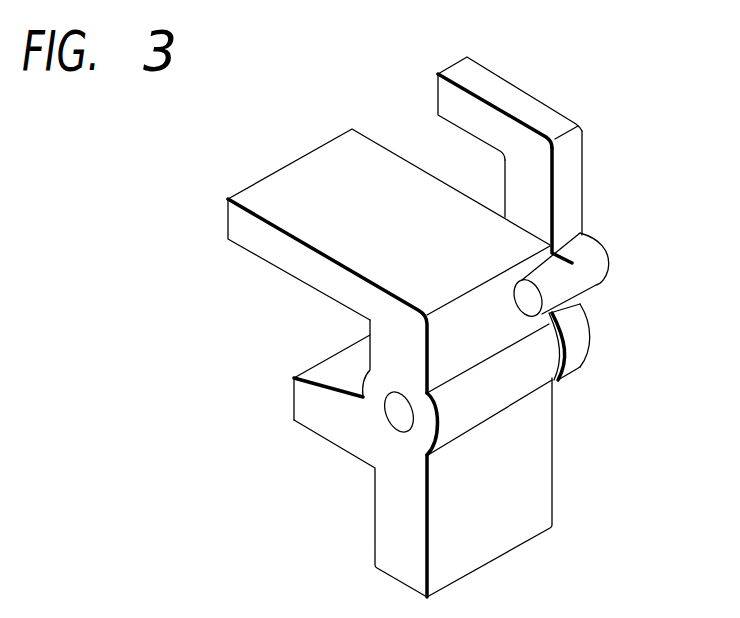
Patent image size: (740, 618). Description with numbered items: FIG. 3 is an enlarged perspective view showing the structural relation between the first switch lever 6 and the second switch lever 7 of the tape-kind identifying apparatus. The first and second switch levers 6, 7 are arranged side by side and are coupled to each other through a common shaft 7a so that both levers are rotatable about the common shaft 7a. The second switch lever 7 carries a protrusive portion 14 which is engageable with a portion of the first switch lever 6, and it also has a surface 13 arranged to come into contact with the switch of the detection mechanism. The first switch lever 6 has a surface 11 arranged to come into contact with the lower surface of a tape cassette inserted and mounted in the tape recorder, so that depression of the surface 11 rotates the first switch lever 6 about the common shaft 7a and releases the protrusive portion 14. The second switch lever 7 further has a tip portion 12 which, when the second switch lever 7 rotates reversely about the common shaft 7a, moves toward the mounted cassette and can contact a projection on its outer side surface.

The first switch lever 6 is at (282, 257).
The second switch lever 7 is at (527, 92).
The common shaft 7a is at (400, 415).
The surface 11 is at (322, 165).
The tip portion 12 is at (453, 65).
The surface 13 is at (567, 162).
The protrusive portion 14 is at (573, 280).